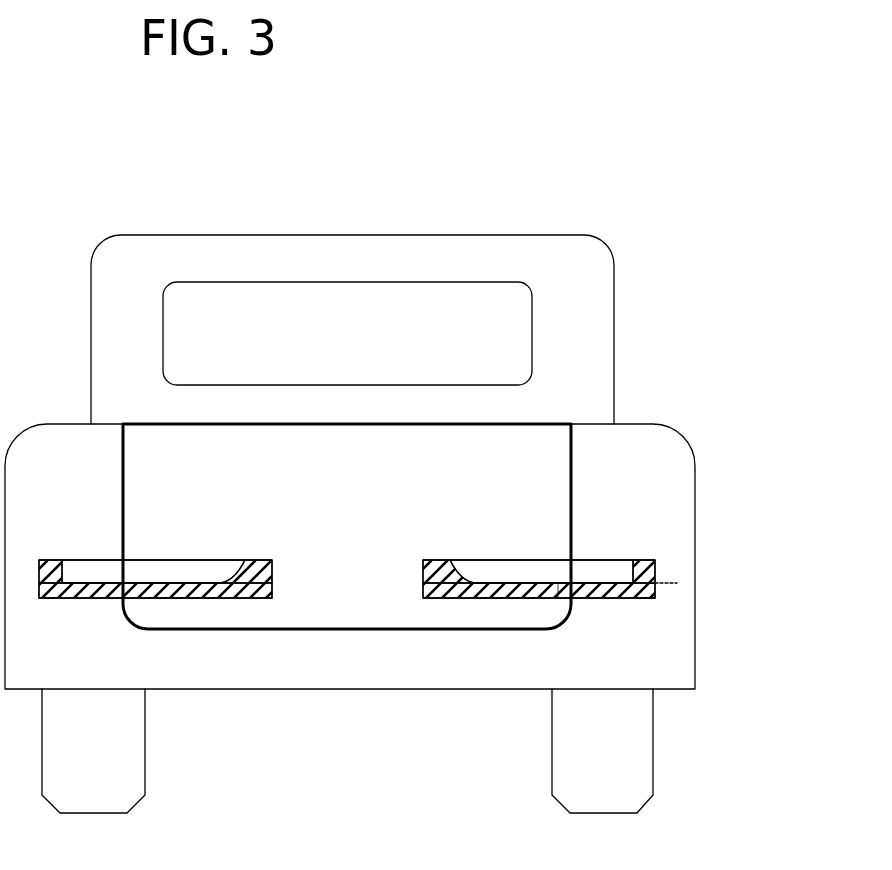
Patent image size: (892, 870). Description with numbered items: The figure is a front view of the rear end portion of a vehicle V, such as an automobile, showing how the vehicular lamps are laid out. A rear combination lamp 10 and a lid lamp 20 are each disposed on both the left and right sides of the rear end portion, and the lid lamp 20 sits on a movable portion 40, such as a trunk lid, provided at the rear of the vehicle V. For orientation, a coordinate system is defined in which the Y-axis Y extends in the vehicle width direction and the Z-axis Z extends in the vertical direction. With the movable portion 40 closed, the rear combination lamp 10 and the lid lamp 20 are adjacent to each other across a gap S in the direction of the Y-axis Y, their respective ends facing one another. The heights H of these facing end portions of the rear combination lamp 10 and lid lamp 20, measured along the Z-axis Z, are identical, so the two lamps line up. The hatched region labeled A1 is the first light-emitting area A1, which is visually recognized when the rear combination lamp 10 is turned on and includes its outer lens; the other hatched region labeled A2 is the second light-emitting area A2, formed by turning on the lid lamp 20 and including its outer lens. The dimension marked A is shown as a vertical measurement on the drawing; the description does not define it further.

The vehicle V is at (409, 229).
The movable portion 40 is at (352, 608).
The rear combination lamp 10 is at (93, 583).
The lid lamp 20 is at (175, 583).
The first light-emitting area A1 is at (88, 600).
The second light-emitting area A2 is at (188, 600).
The gap S is at (123, 600).
The height H is at (558, 543).
The distance A is at (532, 583).
The Z-axis Z is at (753, 785).
The Y-axis Y is at (753, 785).